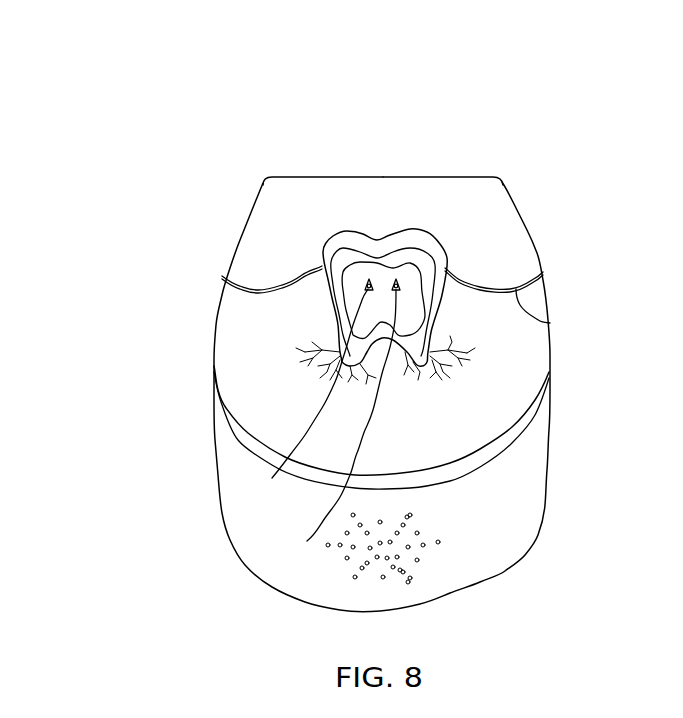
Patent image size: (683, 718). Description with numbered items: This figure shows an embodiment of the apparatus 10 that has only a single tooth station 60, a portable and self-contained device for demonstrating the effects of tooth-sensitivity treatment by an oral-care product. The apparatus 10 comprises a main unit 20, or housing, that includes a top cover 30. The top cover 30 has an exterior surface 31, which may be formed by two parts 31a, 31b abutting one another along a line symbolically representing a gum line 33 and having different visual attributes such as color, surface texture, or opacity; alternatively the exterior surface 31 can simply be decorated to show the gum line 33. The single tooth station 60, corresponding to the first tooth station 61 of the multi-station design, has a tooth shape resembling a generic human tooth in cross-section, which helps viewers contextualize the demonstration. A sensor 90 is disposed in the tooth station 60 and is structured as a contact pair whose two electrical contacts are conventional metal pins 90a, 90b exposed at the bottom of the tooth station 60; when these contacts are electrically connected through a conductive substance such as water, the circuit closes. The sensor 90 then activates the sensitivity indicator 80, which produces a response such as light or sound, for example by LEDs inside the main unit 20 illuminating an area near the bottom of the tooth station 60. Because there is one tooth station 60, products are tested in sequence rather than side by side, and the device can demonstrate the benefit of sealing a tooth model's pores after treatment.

The apparatus 10 is at (585, 88).
The main unit 20 is at (533, 467).
The top cover 30 is at (262, 231).
The exterior surface 31 is at (278, 190).
The first part of exterior surface 31a is at (488, 188).
The second part of exterior surface 31b is at (517, 367).
The gum line 33 is at (550, 323).
The tooth station 60 is at (318, 318).
The first tooth station 61 is at (337, 266).
The sensitivity indicator 80 is at (455, 395).
The sensor 90 is at (370, 279).
The metal pin 90a is at (272, 478).
The metal pin 90b is at (307, 541).